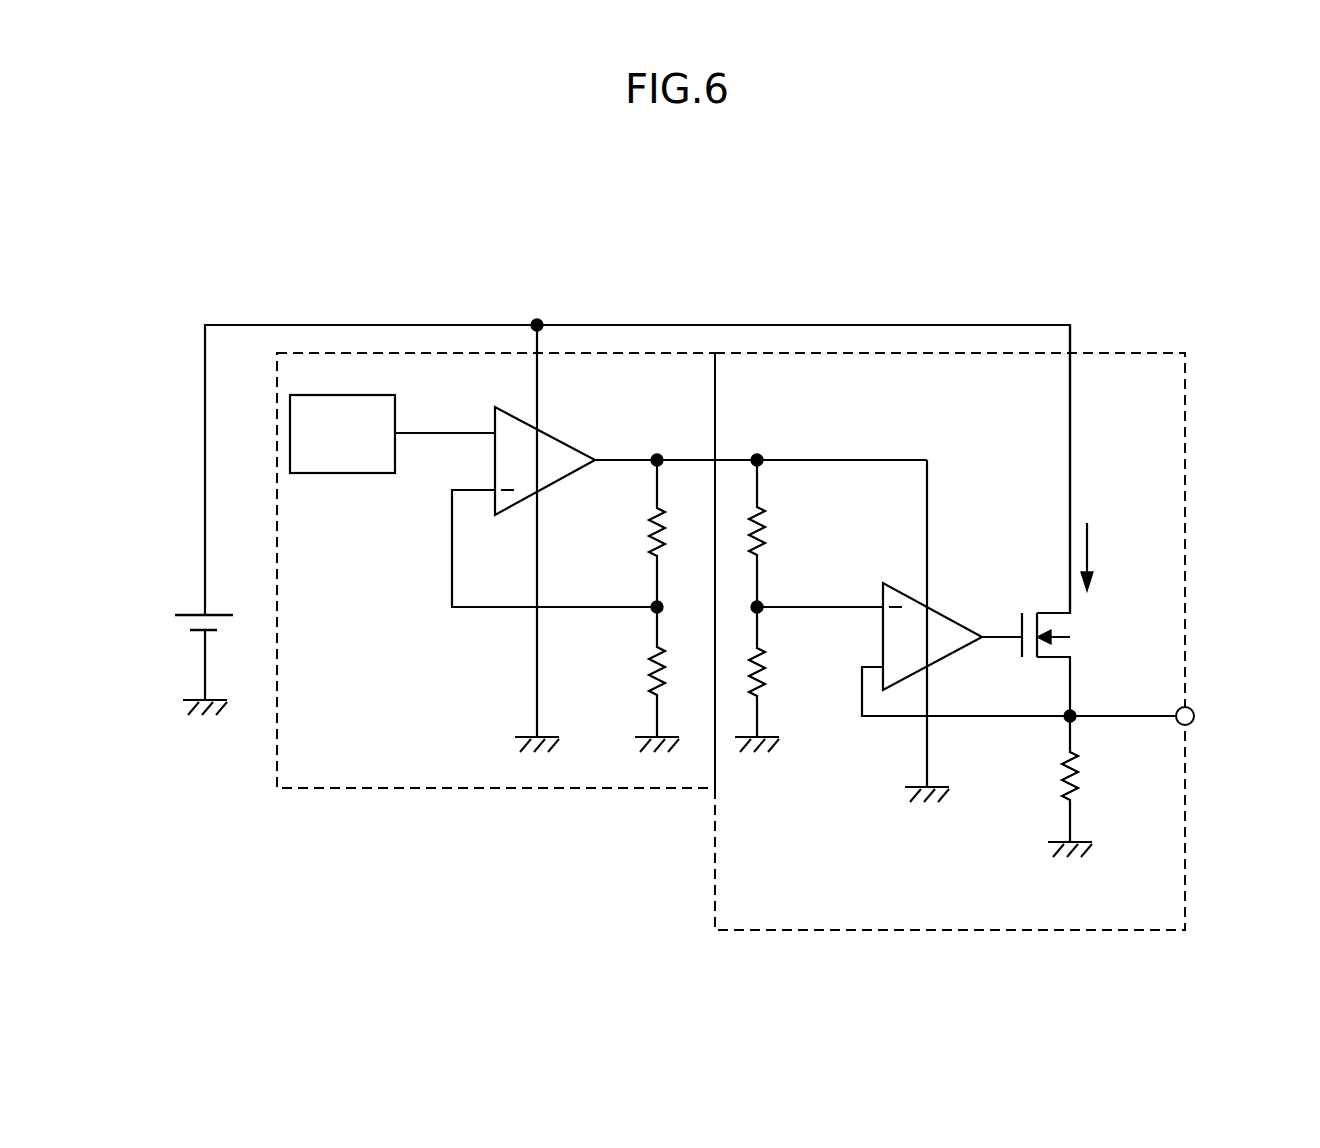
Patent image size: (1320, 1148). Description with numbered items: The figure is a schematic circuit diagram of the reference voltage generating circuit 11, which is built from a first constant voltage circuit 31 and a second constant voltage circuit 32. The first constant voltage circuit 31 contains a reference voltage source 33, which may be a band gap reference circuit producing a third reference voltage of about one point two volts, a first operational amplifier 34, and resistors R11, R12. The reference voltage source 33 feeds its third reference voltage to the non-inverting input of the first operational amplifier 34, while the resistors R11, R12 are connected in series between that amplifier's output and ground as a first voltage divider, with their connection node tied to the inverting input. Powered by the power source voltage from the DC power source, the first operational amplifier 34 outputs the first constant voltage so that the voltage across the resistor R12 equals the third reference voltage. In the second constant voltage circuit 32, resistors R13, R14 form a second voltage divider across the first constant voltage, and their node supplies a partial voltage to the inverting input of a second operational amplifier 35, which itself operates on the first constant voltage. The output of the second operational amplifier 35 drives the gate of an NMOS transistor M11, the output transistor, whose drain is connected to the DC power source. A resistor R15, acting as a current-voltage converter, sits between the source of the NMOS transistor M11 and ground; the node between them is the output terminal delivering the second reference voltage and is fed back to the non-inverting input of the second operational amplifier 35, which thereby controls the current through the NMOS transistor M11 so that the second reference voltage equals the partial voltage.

The reference voltage generating circuit 11 is at (990, 293).
The first constant voltage circuit 31 is at (602, 592).
The second constant voltage circuit 32 is at (946, 627).
The reference voltage source 33 is at (330, 395).
The first operational amplifier 34 is at (540, 430).
The second operational amplifier 35 is at (935, 604).
The resistor R11 is at (625, 536).
The resistor R12 is at (632, 679).
The resistor R13 is at (787, 536).
The resistor R14 is at (780, 679).
The resistor R15 is at (1094, 786).
The NMOS transistor M11 is at (1026, 520).